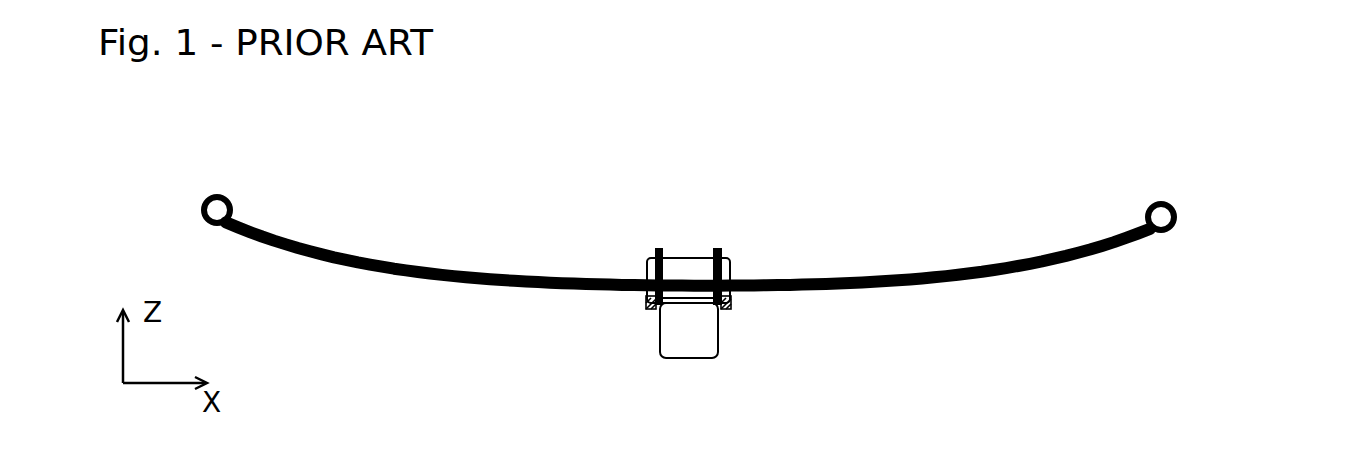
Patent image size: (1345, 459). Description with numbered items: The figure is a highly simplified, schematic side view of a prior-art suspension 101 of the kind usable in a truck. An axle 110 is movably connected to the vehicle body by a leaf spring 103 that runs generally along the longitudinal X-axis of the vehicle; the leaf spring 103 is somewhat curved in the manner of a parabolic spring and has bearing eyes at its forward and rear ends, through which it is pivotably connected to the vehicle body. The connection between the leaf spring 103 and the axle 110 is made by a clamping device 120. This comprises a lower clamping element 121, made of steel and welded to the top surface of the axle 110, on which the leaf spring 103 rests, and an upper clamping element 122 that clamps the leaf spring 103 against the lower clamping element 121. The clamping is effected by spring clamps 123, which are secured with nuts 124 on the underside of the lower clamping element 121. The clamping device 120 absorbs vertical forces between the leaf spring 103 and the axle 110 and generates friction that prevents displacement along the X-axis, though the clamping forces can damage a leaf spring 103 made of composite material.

The suspension 101 is at (1184, 121).
The leaf spring 103 is at (870, 277).
The axle 110 is at (693, 358).
The clamping device 120 is at (713, 215).
The lower clamping element 121 is at (648, 298).
The upper clamping element 122 is at (685, 256).
The spring clamps 123 is at (658, 252).
The nuts 124 is at (657, 310).